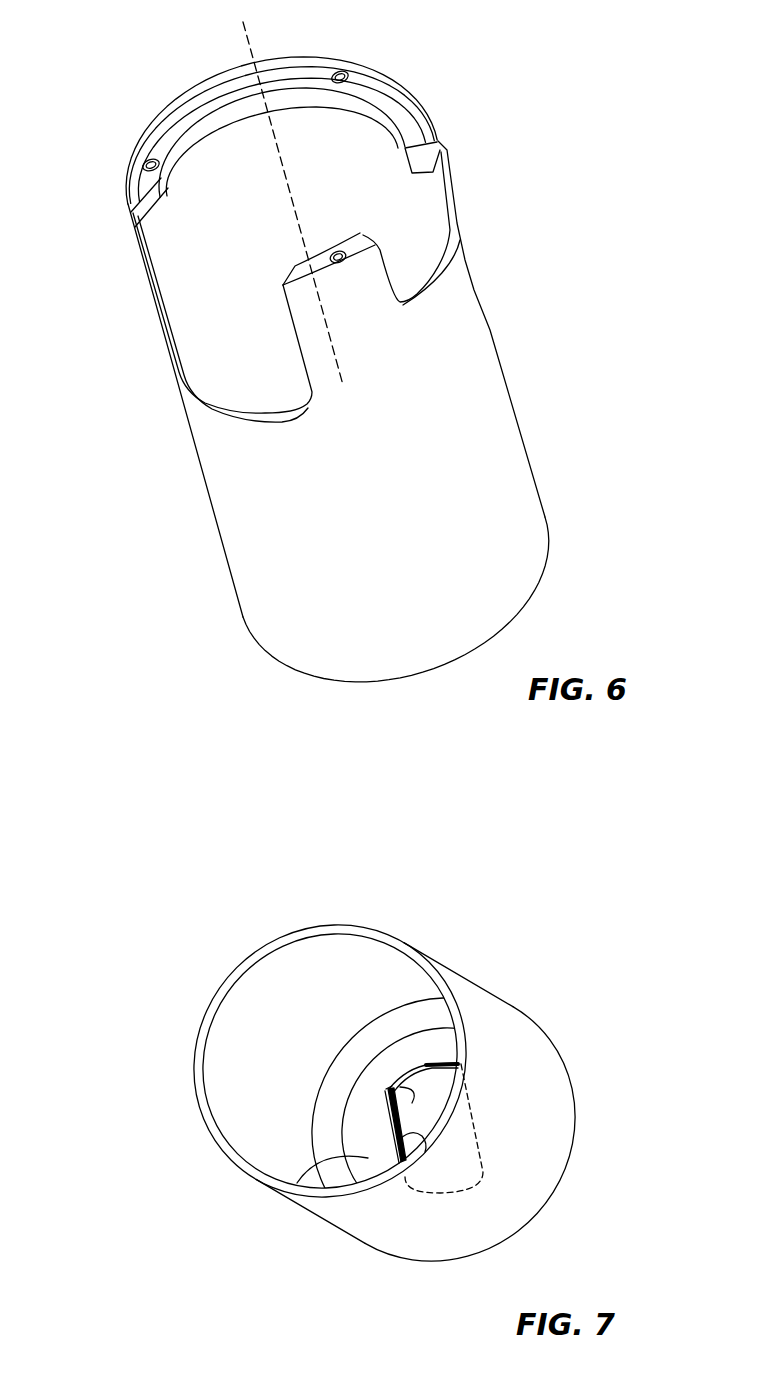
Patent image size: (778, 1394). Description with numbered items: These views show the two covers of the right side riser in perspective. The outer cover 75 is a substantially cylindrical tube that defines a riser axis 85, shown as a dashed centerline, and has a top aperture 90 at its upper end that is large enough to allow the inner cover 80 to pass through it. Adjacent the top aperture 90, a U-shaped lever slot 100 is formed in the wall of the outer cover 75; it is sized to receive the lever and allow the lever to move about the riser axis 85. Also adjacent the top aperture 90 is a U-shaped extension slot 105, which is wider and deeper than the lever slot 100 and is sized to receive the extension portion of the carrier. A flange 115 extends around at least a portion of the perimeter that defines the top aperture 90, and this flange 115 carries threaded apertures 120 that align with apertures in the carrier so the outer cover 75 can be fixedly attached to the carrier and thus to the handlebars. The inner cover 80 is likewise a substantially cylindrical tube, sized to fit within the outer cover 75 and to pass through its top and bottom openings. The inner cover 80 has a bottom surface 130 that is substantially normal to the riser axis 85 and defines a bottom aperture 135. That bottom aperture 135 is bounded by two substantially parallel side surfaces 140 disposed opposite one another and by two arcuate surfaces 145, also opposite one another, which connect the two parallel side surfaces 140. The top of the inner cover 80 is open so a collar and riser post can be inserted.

In FIG. 6, the outer cover 75 is at (339, 346).
In FIG. 7, the inner cover 80 is at (378, 1091).
In FIG. 6, the riser axis 85 is at (247, 53).
In FIG. 6, the top aperture 90 is at (344, 145).
In FIG. 6, the lever slot 100 is at (460, 245).
In FIG. 6, the extension slot 105 is at (198, 397).
In FIG. 6, the flange 115 is at (195, 140).
In FIG. 6, the threaded apertures 120 is at (334, 71).
In FIG. 7, the bottom surface 130 is at (366, 1160).
In FIG. 7, the bottom aperture 135 is at (428, 1092).
In FIG. 7, the side surfaces 140 is at (416, 1142).
In FIG. 7, the arcuate surfaces 145 is at (387, 1092).